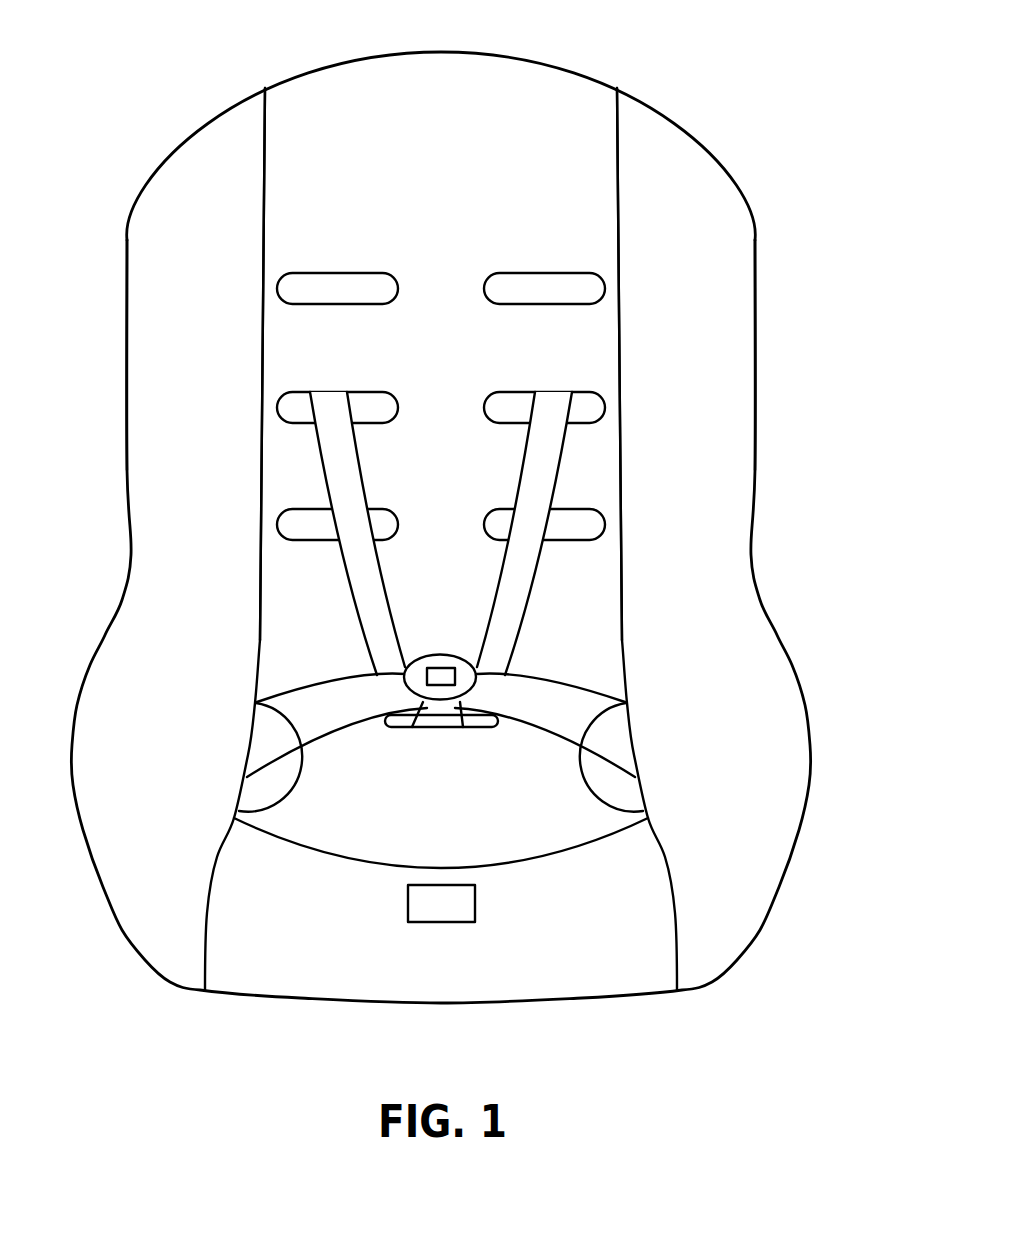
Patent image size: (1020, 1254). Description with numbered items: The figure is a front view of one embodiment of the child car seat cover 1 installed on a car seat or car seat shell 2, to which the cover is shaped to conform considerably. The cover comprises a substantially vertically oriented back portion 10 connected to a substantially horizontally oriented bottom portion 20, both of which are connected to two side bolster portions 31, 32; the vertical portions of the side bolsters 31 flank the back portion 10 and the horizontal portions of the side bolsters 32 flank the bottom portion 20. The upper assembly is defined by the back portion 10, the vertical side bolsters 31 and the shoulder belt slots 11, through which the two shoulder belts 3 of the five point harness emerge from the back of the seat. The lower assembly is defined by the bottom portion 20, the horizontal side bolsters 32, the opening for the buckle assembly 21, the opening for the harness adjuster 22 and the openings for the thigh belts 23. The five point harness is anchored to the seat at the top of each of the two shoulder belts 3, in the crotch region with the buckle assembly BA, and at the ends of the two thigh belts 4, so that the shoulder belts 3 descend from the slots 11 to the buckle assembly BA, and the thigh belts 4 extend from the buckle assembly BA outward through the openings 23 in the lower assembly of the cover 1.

The child car seat cover 1 is at (583, 86).
The back portion 10 is at (455, 191).
The bottom portion 20 is at (453, 830).
The car seat or car seat shell 2 is at (92, 393).
The side bolster portion (vertical portion) 31 is at (196, 228).
The side bolster portion (horizontal portion) 32 is at (206, 738).
The shoulder belt slots 11 is at (342, 328).
The shoulder belts 3 is at (488, 578).
The thigh belts 4 is at (335, 760).
The buckle assembly BA is at (494, 652).
The opening for the buckle assembly 21 is at (440, 747).
The opening for the harness adjuster 22 is at (449, 942).
The openings for thigh belts 23 is at (272, 790).